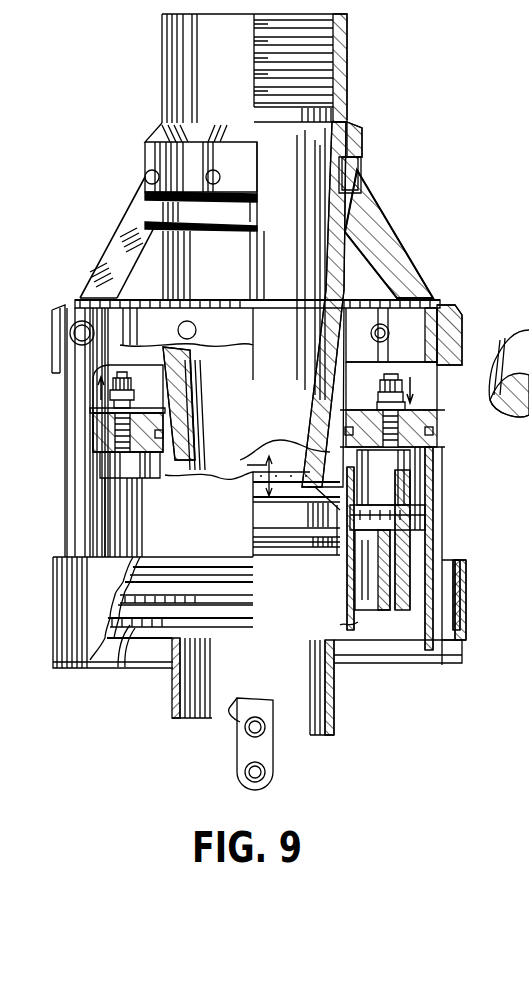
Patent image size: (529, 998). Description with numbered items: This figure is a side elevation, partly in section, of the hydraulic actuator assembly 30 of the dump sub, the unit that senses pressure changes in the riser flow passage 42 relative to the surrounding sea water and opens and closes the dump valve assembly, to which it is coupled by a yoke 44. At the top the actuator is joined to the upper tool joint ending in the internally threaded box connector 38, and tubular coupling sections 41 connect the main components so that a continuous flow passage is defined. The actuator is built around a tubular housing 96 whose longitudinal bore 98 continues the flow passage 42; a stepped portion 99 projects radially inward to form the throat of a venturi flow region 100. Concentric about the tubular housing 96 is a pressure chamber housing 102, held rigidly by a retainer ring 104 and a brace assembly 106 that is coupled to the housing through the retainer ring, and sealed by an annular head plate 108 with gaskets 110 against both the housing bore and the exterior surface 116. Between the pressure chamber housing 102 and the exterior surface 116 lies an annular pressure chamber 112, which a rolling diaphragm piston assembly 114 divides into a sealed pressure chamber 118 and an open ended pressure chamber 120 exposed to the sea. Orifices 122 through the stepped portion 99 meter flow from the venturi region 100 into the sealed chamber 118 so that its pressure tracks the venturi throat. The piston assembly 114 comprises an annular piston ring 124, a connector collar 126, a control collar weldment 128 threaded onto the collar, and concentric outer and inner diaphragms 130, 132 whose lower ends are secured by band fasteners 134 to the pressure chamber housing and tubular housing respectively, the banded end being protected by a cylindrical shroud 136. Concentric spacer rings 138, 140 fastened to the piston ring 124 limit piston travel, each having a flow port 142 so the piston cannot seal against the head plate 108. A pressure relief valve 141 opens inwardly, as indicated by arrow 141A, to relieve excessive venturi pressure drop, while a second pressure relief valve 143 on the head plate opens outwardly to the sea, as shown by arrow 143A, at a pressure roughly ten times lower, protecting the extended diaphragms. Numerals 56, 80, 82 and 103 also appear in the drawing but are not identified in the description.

The hydraulic actuator assembly 30 is at (69, 272).
The internally threaded box connector 38 is at (350, 58).
The tubular coupling section 41 is at (333, 710).
The flow passage 42 is at (272, 600).
The yoke 44 is at (240, 722).
The member 56 is at (517, 204).
The member 80 is at (509, 400).
The member 82 is at (528, 297).
The tubular housing 96 is at (348, 120).
The bore 98 is at (322, 252).
The stepped portion 99 is at (285, 449).
The venturi flow region 100 is at (250, 472).
The pressure chamber housing 102 is at (435, 487).
The body block 103 is at (95, 433).
The retainer ring 104 is at (145, 162).
The brace assembly 106 is at (132, 228).
The annular head plate 108 is at (160, 300).
The gasket 110 is at (180, 428).
The annular pressure chamber 112 is at (440, 495).
The rolling diaphragm piston assembly 114 is at (410, 618).
The exterior surface 116 is at (270, 436).
The sealed pressure chamber 118 is at (255, 477).
The open ended pressure chamber 120 is at (365, 585).
The orifice 122 is at (312, 516).
The annular piston ring 124 is at (425, 516).
The connector collar 126 is at (318, 563).
The control collar weldment 128 is at (372, 602).
The outer diaphragm 130 is at (436, 545).
The inner diaphragm 132 is at (372, 565).
The band fastener 134 is at (458, 612).
The cylindrical shroud 136 is at (80, 558).
The spacer ring 138 is at (443, 467).
The spacer ring 140 is at (362, 496).
The pressure relief valve 141 is at (380, 392).
The arrow 141A is at (420, 397).
The flow port 142 is at (92, 476).
The pressure relief valve 143 is at (142, 392).
The arrow 143A is at (95, 393).